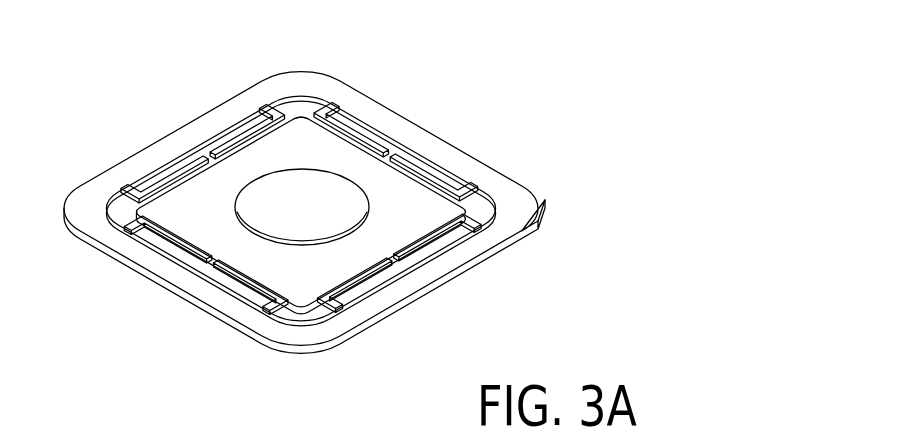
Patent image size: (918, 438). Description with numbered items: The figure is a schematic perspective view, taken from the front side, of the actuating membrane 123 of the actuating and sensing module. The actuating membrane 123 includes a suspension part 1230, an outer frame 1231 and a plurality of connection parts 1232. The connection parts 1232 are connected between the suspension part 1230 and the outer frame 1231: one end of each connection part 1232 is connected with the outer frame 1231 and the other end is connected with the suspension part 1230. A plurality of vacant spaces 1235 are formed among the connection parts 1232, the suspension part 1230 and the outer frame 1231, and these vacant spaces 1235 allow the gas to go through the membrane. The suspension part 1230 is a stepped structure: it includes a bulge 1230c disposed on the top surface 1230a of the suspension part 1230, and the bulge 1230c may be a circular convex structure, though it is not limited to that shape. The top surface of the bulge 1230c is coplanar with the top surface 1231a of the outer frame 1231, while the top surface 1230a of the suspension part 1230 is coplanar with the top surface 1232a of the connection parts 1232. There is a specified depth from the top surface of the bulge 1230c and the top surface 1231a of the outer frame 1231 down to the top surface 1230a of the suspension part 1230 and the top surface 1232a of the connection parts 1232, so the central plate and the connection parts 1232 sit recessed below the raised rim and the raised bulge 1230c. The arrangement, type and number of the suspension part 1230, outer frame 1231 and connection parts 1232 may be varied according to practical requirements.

The actuating membrane 123 is at (361, 199).
The suspension part 1230 is at (300, 114).
The top surface of the suspension part 1230a is at (314, 131).
The bulge 1230c is at (327, 207).
The outer frame 1231 is at (333, 343).
The top surface of the outer frame 1231a is at (295, 335).
The connection parts 1232 is at (214, 159).
The top surface of the connection parts 1232a is at (212, 162).
The vacant spaces 1235 is at (477, 213).